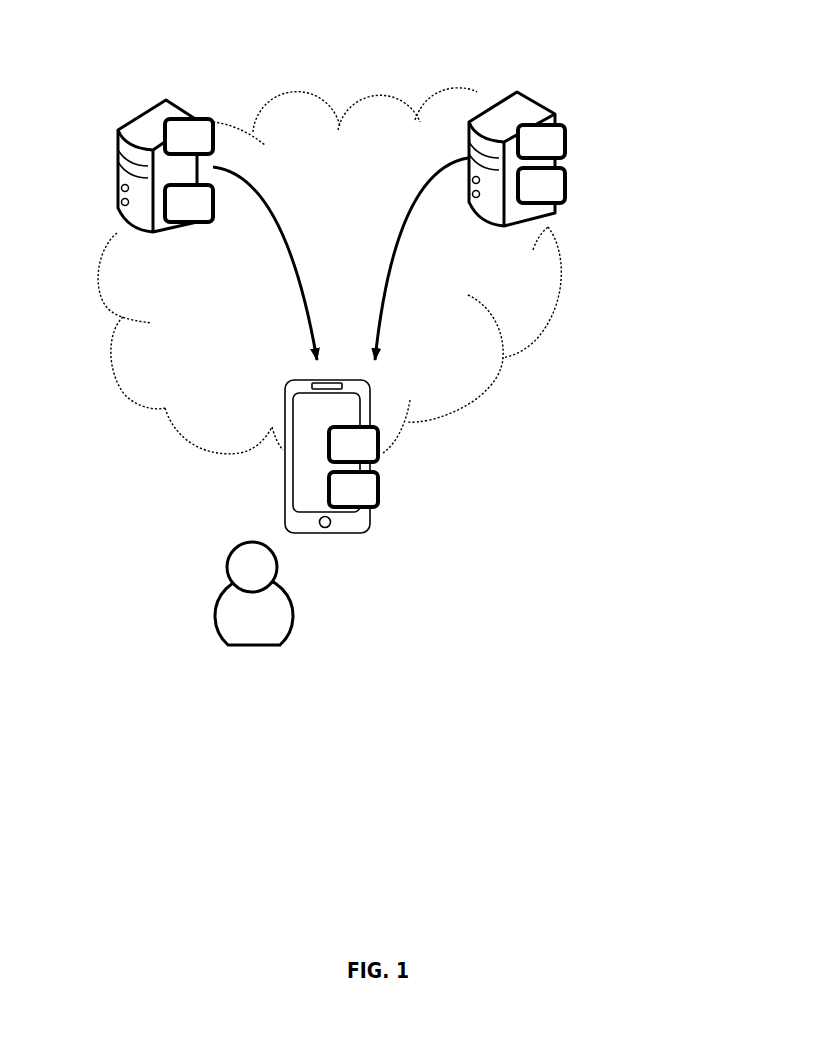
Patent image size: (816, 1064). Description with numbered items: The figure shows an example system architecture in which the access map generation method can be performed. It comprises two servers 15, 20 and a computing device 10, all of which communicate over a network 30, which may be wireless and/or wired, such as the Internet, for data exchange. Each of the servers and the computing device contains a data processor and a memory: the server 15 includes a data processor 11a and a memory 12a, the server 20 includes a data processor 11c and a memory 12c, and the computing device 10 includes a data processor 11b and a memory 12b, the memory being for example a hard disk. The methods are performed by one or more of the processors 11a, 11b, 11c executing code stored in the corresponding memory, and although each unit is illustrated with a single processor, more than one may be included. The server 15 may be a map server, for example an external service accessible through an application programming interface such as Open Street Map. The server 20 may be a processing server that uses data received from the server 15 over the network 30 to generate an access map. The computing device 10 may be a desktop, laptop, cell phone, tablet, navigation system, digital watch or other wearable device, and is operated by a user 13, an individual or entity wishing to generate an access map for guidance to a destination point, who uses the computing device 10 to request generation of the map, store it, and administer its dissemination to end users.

The computing device 10 is at (268, 479).
The data processor 11a is at (570, 136).
The data processor 11b is at (386, 456).
The data processor 11c is at (197, 98).
The memory 12a is at (570, 178).
The memory 12b is at (386, 501).
The memory 12c is at (198, 228).
The user 13 is at (201, 569).
The server 15 is at (540, 86).
The server 20 is at (140, 99).
The network 30 is at (336, 100).